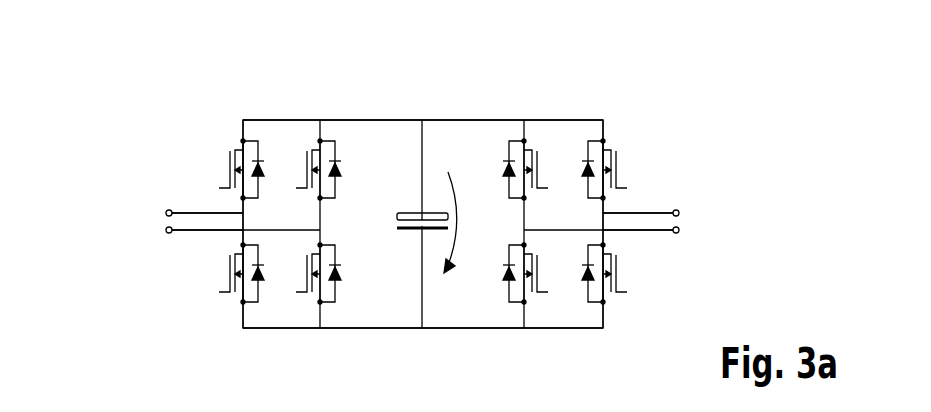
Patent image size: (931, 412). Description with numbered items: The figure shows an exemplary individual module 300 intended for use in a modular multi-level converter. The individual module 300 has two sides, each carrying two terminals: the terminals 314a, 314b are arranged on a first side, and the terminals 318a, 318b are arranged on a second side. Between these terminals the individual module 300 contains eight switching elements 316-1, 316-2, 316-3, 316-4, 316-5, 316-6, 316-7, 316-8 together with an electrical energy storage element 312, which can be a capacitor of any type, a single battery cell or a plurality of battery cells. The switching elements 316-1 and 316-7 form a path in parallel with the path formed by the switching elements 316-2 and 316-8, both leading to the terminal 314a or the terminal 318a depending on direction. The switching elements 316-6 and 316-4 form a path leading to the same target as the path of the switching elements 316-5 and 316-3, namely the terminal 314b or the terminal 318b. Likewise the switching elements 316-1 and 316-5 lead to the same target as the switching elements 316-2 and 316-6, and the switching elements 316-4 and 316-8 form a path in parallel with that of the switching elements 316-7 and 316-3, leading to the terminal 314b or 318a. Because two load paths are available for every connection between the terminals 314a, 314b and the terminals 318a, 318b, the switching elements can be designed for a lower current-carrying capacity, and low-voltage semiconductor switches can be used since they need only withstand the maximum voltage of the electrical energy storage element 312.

The individual module 300 is at (152, 108).
The electrical energy storage element 312 is at (410, 212).
The terminal 314a is at (685, 210).
The terminal 314b is at (685, 232).
The switching element 316-1 is at (583, 154).
The switching element 316-2 is at (582, 290).
The switching element 316-3 is at (504, 154).
The switching element 316-4 is at (504, 290).
The switching element 316-5 is at (343, 154).
The switching element 316-6 is at (339, 290).
The switching element 316-7 is at (265, 154).
The switching element 316-8 is at (264, 290).
The terminal 318a is at (160, 212).
The terminal 318b is at (160, 232).